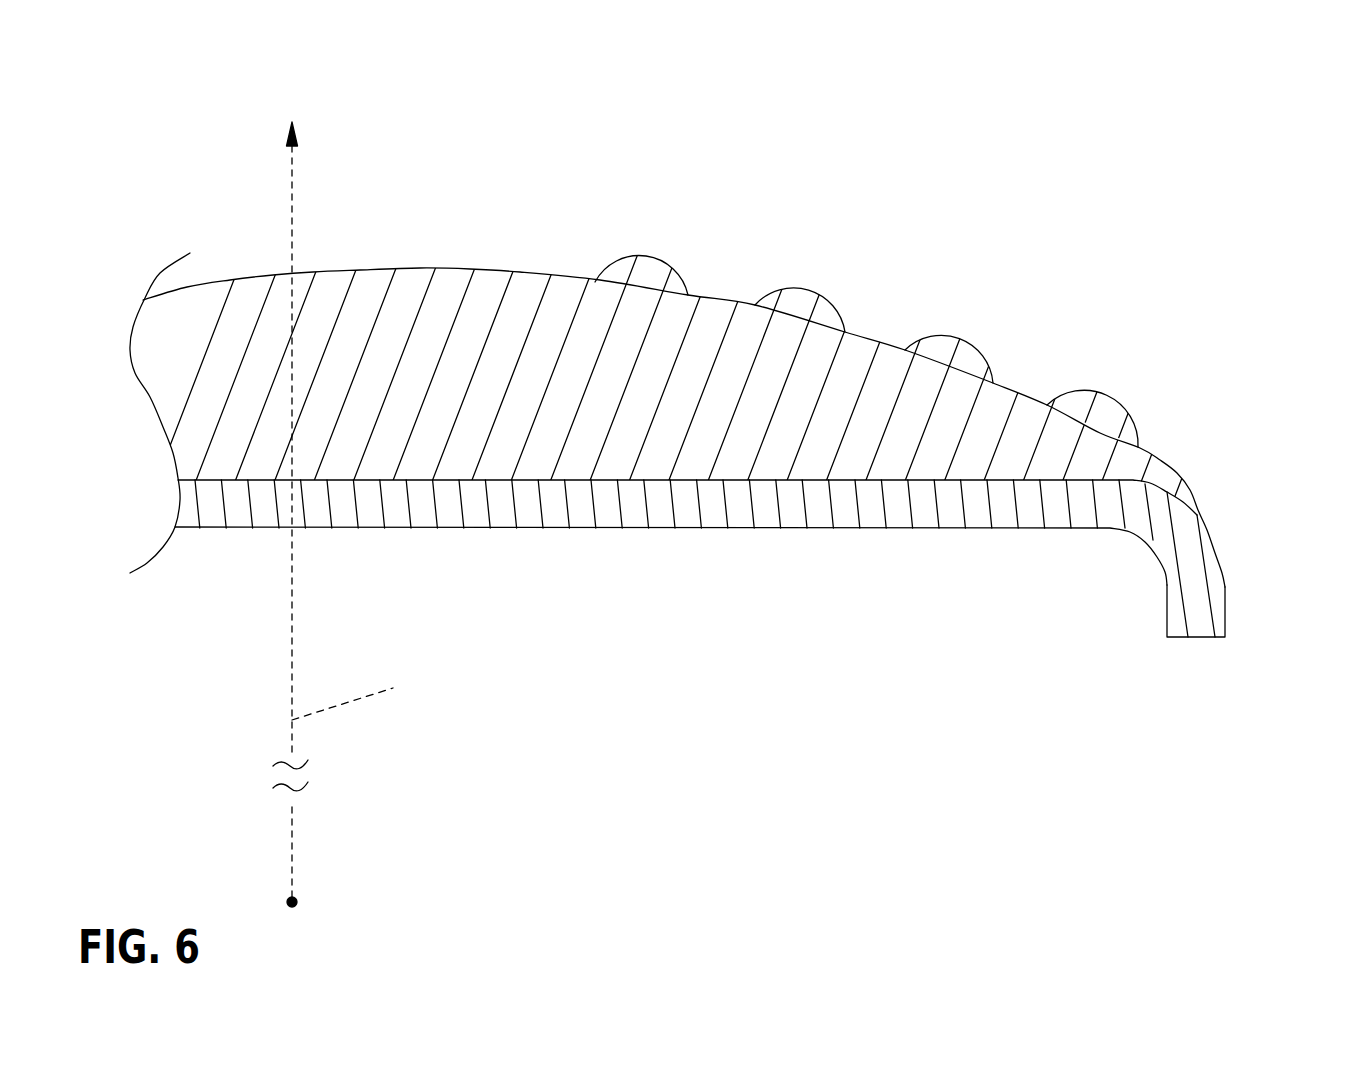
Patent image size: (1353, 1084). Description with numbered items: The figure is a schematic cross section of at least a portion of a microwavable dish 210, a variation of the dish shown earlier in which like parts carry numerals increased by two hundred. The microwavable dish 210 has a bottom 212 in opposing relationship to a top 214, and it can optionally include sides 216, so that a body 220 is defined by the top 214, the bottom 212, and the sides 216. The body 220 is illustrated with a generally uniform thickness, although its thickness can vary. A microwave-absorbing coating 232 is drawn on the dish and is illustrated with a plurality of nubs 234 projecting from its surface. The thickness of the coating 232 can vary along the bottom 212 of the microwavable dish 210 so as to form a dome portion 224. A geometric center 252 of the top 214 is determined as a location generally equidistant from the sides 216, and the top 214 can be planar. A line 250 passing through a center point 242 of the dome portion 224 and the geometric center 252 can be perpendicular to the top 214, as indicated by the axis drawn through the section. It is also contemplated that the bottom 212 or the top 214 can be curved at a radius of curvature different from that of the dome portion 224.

The microwavable dish 210 is at (870, 137).
The bottom 212 is at (997, 477).
The top 214 is at (1010, 530).
The sides 216 is at (1226, 583).
The body 220 is at (1153, 650).
The dome portion 224 is at (357, 270).
The microwave-absorbing coating 232 is at (513, 270).
The nubs 234 is at (660, 255).
The center point 242 is at (297, 900).
The line 250 is at (362, 694).
The geometric center 252 is at (292, 527).